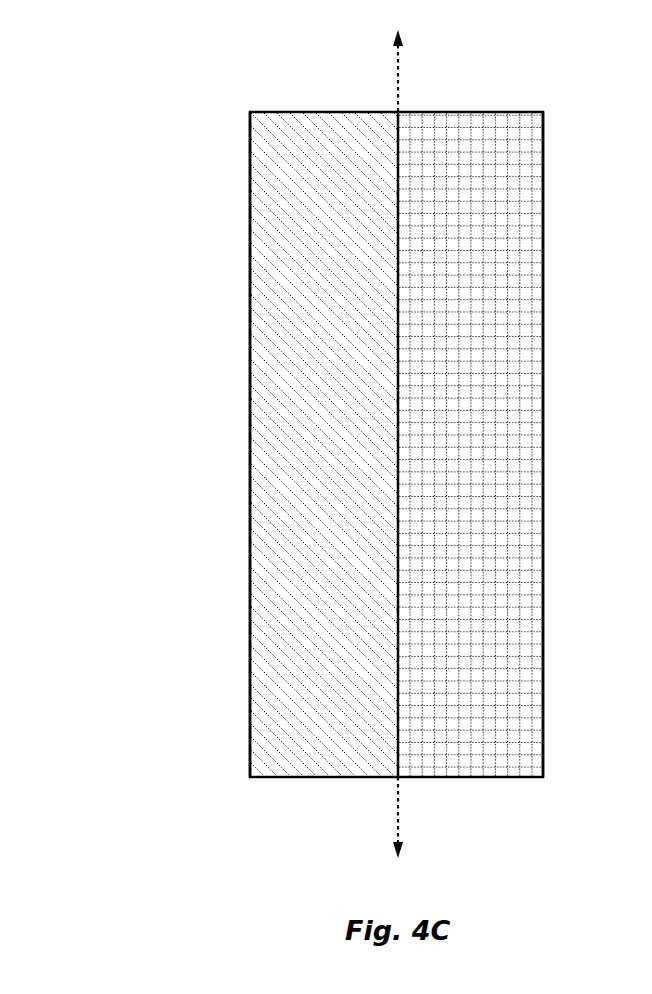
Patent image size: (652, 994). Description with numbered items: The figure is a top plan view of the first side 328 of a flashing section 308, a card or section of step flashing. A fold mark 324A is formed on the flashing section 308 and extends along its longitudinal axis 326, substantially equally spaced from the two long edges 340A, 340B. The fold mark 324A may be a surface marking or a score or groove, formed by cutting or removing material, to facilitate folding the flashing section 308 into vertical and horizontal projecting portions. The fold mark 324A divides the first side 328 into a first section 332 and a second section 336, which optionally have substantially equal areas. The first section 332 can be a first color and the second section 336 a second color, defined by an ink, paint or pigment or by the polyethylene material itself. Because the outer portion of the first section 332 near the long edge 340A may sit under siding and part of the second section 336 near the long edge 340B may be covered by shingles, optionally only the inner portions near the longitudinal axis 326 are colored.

The flashing section 308 is at (145, 82).
The first side 328 is at (493, 132).
The first section 332 is at (324, 444).
The second section 336 is at (470, 444).
The fold mark 324A is at (397, 758).
The longitudinal axis 326 is at (397, 802).
The long edge 340A is at (250, 523).
The long edge 340B is at (543, 529).